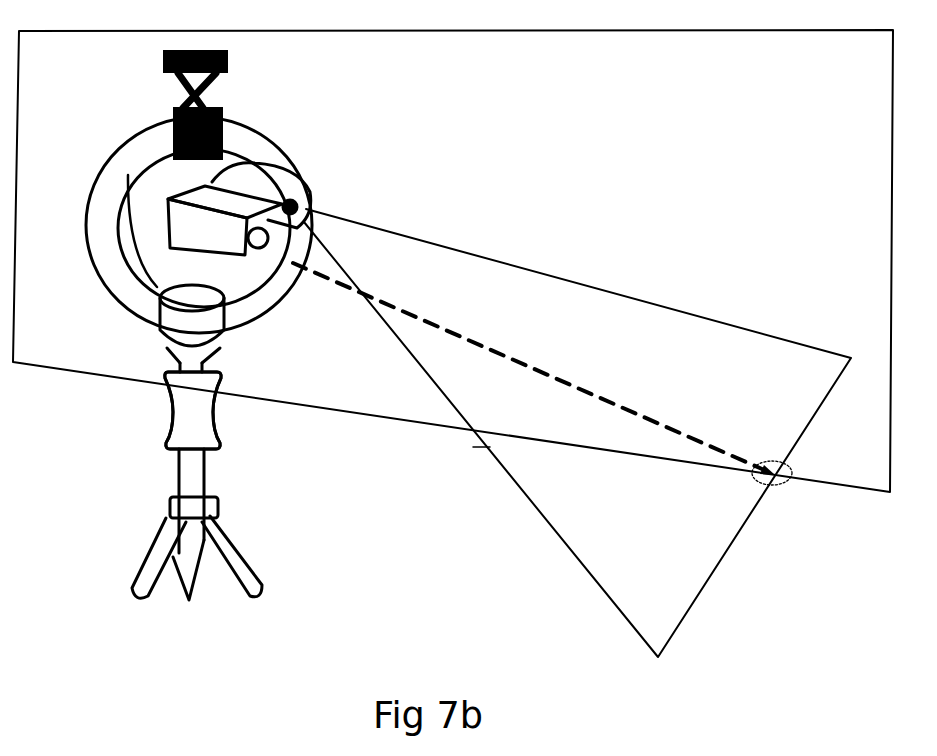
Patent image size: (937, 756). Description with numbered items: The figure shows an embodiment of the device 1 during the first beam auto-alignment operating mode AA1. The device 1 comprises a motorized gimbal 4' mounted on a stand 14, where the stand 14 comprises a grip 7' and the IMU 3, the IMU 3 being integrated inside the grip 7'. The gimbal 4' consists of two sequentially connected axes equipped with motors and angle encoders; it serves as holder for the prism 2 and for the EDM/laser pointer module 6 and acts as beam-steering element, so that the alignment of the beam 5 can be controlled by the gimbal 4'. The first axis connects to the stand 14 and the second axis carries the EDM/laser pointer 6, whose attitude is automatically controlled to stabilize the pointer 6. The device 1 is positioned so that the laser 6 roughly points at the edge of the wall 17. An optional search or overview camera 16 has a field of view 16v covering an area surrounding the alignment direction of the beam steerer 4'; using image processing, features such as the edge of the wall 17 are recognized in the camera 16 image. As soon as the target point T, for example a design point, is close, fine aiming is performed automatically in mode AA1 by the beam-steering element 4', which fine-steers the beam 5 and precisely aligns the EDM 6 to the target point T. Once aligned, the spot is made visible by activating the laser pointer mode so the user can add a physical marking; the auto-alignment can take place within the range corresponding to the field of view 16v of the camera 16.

The device 1 is at (312, 72).
The prism 2 is at (180, 100).
The IMU 3 is at (136, 410).
The grip 7' is at (193, 410).
The motorized gimbal 4' is at (251, 328).
The beam 5 is at (534, 325).
The EDM/laser pointer module 6 is at (225, 222).
The stand 14 is at (188, 485).
The overview camera 16 is at (283, 170).
The field of view 16v is at (751, 369).
The wall 17 is at (453, 261).
The first auto-alignment operating mode AA1 is at (577, 433).
The target point T is at (799, 500).